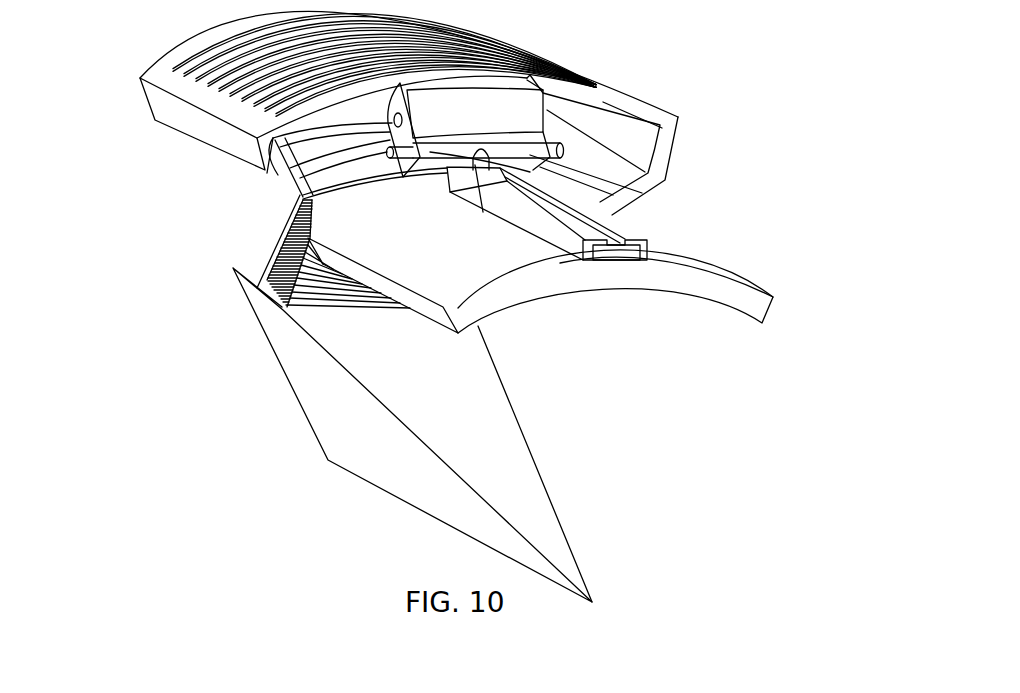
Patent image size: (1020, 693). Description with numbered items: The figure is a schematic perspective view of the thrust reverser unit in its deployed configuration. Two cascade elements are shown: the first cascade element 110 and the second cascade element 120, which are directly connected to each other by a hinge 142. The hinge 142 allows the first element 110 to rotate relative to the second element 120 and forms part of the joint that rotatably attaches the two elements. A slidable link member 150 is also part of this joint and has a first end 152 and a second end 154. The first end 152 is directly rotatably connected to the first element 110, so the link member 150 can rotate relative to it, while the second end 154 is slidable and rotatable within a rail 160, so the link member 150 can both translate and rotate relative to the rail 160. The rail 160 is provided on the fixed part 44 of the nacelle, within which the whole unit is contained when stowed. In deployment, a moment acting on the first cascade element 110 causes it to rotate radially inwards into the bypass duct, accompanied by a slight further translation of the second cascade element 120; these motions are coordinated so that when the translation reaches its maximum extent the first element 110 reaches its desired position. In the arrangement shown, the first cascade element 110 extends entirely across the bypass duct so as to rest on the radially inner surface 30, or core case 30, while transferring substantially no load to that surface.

The radially inner surface 30 is at (525, 499).
The fixed part of the nacelle 44 is at (748, 293).
The first cascade element 110 is at (645, 193).
The second cascade element 120 is at (182, 93).
The hinge 142 is at (388, 123).
The slidable link member 150 is at (482, 156).
The first end 152 is at (447, 178).
The second end 154 is at (577, 262).
The rail 160 is at (648, 240).